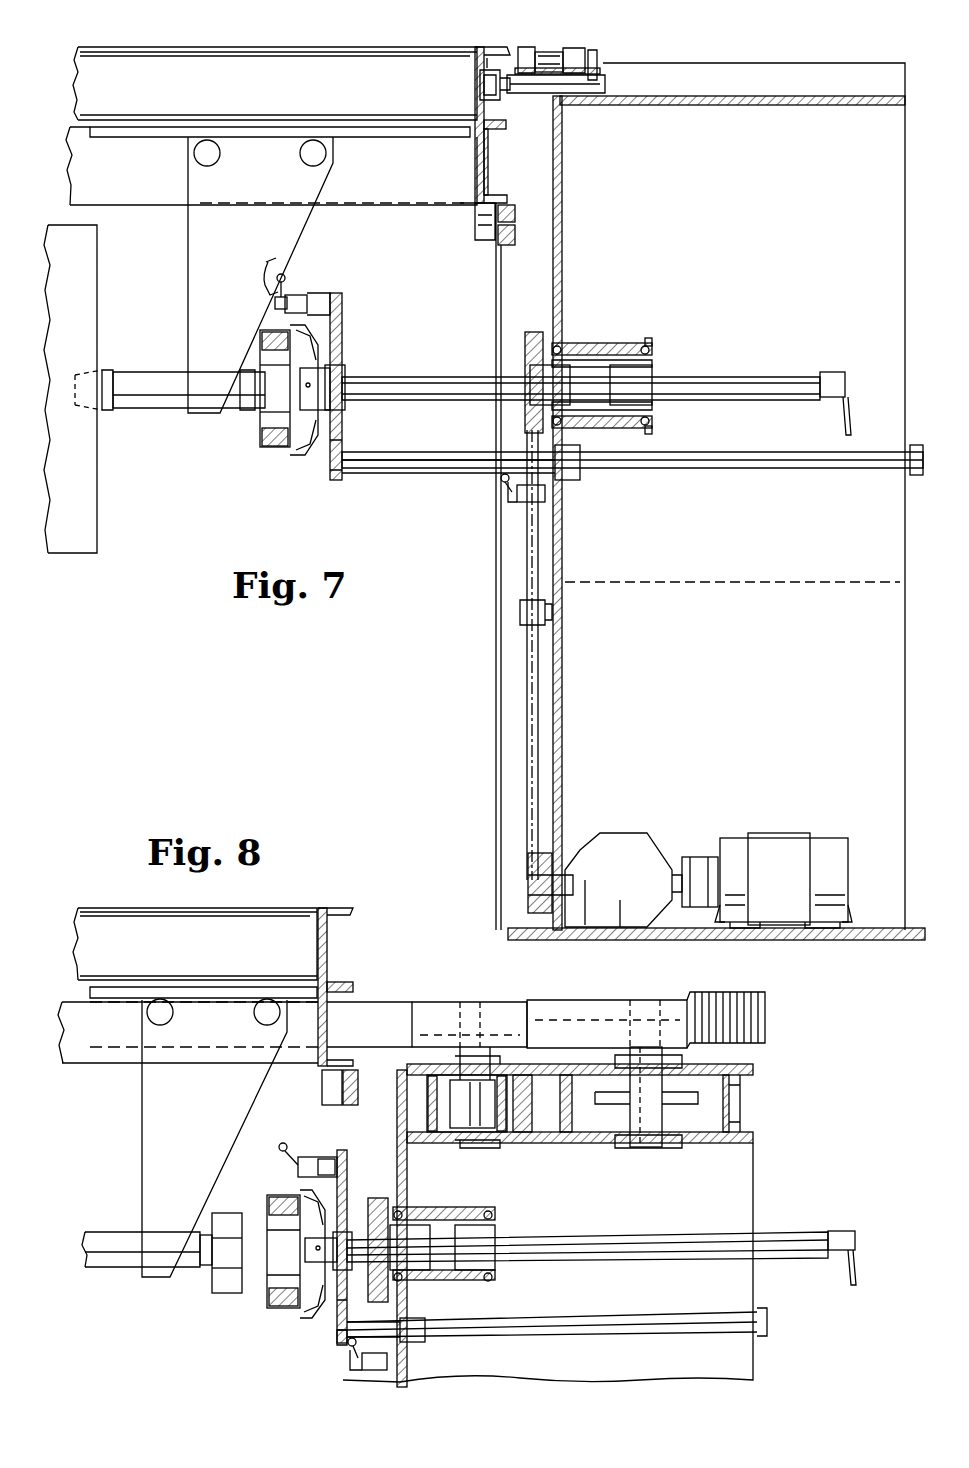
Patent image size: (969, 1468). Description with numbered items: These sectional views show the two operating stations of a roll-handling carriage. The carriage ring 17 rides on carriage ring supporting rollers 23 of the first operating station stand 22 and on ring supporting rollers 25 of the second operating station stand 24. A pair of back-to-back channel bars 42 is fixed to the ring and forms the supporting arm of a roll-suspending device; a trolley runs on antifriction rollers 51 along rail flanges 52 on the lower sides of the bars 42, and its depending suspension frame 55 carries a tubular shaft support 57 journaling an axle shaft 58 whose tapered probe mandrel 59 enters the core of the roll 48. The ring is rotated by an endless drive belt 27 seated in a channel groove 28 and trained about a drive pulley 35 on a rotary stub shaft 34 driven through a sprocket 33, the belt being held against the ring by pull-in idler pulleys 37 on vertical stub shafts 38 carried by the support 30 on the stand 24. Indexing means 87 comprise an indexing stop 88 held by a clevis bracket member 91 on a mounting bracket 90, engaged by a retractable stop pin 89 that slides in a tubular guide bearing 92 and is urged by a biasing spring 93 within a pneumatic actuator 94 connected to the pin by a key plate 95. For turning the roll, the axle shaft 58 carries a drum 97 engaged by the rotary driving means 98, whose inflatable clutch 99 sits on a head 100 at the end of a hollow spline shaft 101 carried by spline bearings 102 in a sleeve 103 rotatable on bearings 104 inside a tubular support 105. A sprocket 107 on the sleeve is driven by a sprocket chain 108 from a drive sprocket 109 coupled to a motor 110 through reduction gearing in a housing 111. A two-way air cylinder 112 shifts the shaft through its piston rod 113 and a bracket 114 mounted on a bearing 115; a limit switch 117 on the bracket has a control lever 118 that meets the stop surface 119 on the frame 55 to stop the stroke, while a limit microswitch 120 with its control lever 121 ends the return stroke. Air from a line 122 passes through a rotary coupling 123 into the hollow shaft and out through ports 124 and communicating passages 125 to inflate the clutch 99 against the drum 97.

In FIG. 7, the carriage ring 17 is at (475, 163).
In FIG. 8, the carriage ring 17 is at (318, 1022).
In FIG. 7, the first operating station stand 22 is at (496, 706).
In FIG. 7, the carriage ring supporting rollers 23 is at (482, 566).
In FIG. 8, the second operating station stand 24 is at (767, 1170).
In FIG. 8, the ring supporting rollers 25 is at (322, 1090).
In FIG. 7, the endless drive belt 27 is at (490, 165).
In FIG. 8, the endless drive belt 27 is at (392, 1002).
In FIG. 8, the channel groove 28 is at (335, 1022).
In FIG. 8, the support 30 is at (700, 1143).
In FIG. 8, the sprocket 33 is at (700, 1090).
In FIG. 8, the rotary stub shaft 34 is at (662, 1100).
In FIG. 8, the drive pulley 35 is at (568, 1010).
In FIG. 8, the pull-in idler pulleys 37 is at (490, 1002).
In FIG. 8, the vertical stub shafts 38 is at (480, 1120).
In FIG. 7, the channel bars 42 is at (225, 72).
In FIG. 8, the channel bars 42 is at (98, 920).
In FIG. 7, the roll 48 is at (97, 508).
In FIG. 7, the antifriction rollers 51 is at (303, 160).
In FIG. 8, the antifriction rollers 51 is at (255, 1012).
In FIG. 7, the rail flanges 52 is at (148, 135).
In FIG. 8, the rail flanges 52 is at (188, 1032).
In FIG. 7, the suspension frame 55 is at (188, 253).
In FIG. 8, the suspension frame 55 is at (142, 1088).
In FIG. 7, the tubular shaft support 57 is at (155, 375).
In FIG. 8, the tubular shaft support 57 is at (110, 1232).
In FIG. 8, the axle shaft 58 is at (212, 1270).
In FIG. 7, the tapered probe mandrel 59 is at (108, 370).
In FIG. 7, the indexing means 87 is at (590, 46).
In FIG. 7, the indexing stop 88 is at (480, 80).
In FIG. 7, the retractable stop pin 89 is at (600, 106).
In FIG. 7, the mounting bracket 90 is at (478, 47).
In FIG. 8, the mounting bracket 90 is at (340, 912).
In FIG. 7, the clevis bracket member 91 is at (485, 90).
In FIG. 7, the tubular guide bearing 92 is at (535, 96).
In FIG. 7, the biasing spring 93 is at (550, 50).
In FIG. 7, the pneumatic actuator 94 is at (528, 48).
In FIG. 7, the key plate 95 is at (600, 62).
In FIG. 7, the drum 97 is at (262, 410).
In FIG. 8, the drum 97 is at (225, 1210).
In FIG. 7, the rotary driving means 98 is at (320, 469).
In FIG. 8, the rotary driving means 98 is at (274, 1326).
In FIG. 7, the inflatable clutch 99 is at (292, 440).
In FIG. 8, the inflatable clutch 99 is at (300, 1300).
In FIG. 7, the head 100 is at (320, 438).
In FIG. 8, the head 100 is at (320, 1302).
In FIG. 7, the spline shaft 101 is at (430, 378).
In FIG. 8, the spline shaft 101 is at (612, 1238).
In FIG. 7, the spline bearings 102 is at (560, 366).
In FIG. 8, the spline bearings 102 is at (420, 1228).
In FIG. 7, the sleeve 103 is at (652, 350).
In FIG. 8, the sleeve 103 is at (500, 1268).
In FIG. 7, the bearings 104 is at (552, 420).
In FIG. 7, the tubular support 105 is at (608, 343).
In FIG. 8, the tubular support 105 is at (495, 1282).
In FIG. 7, the sprocket 107 is at (530, 332).
In FIG. 8, the sprocket 107 is at (388, 1290).
In FIG. 7, the sprocket chain 108 is at (527, 560).
In FIG. 7, the drive sprocket 109 is at (528, 856).
In FIG. 7, the motor 110 is at (785, 836).
In FIG. 7, the housing 111 is at (618, 836).
In FIG. 7, the two-way air cylinder 112 is at (850, 426).
In FIG. 8, the two-way air cylinder 112 is at (668, 1316).
In FIG. 7, the piston rod 113 is at (425, 476).
In FIG. 8, the piston rod 113 is at (342, 1342).
In FIG. 7, the bracket 114 is at (320, 296).
In FIG. 8, the bracket 114 is at (337, 1335).
In FIG. 7, the bearing 115 is at (338, 375).
In FIG. 8, the bearing 115 is at (345, 1232).
In FIG. 7, the limit switch 117 is at (292, 297).
In FIG. 8, the limit switch 117 is at (337, 1165).
In FIG. 7, the pin 118 is at (285, 276).
In FIG. 8, the pin 118 is at (282, 1143).
In FIG. 7, the stop surface 119 is at (268, 262).
In FIG. 7, the limit microswitch 120 is at (545, 495).
In FIG. 8, the limit microswitch 120 is at (387, 1362).
In FIG. 7, the control lever 121 is at (500, 482).
In FIG. 8, the control lever 121 is at (362, 1348).
In FIG. 8, the line 122 is at (858, 1270).
In FIG. 7, the rotary coupling 123 is at (840, 372).
In FIG. 8, the rotary coupling 123 is at (845, 1231).
In FIG. 7, the ports 124 is at (305, 385).
In FIG. 8, the ports 124 is at (316, 1250).
In FIG. 7, the communicating passages 125 is at (310, 342).
In FIG. 8, the communicating passages 125 is at (318, 1196).